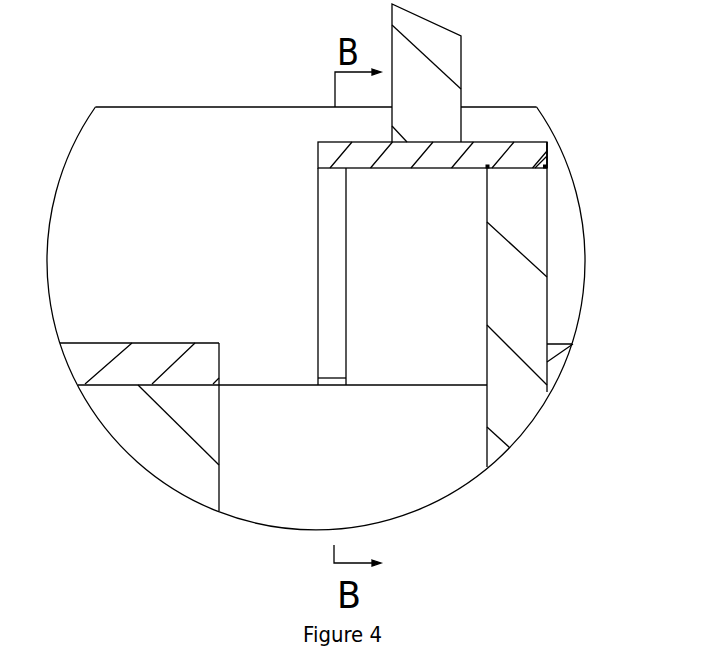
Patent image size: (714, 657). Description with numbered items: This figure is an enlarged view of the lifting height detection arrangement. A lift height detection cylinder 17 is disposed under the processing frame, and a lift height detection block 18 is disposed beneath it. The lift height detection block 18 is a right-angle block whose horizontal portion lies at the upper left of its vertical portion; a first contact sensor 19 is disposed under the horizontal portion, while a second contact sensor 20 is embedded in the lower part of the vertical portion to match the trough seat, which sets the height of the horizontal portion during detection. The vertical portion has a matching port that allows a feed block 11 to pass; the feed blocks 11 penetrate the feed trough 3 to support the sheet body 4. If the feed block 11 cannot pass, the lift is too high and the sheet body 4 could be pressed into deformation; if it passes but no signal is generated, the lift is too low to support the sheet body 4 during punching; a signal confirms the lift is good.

The feed trough 3 is at (253, 452).
The sheet body 4 is at (85, 353).
The feed block 11 is at (527, 277).
The lift height detection cylinder 17 is at (443, 108).
The lift height detection block 18 is at (352, 163).
The first contact sensor 19 is at (547, 166).
The second contact sensor 20 is at (330, 383).